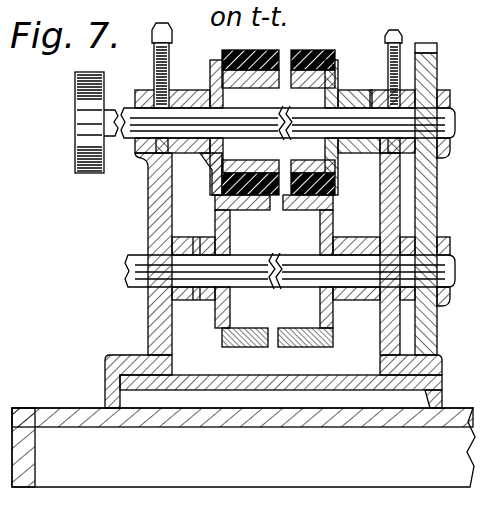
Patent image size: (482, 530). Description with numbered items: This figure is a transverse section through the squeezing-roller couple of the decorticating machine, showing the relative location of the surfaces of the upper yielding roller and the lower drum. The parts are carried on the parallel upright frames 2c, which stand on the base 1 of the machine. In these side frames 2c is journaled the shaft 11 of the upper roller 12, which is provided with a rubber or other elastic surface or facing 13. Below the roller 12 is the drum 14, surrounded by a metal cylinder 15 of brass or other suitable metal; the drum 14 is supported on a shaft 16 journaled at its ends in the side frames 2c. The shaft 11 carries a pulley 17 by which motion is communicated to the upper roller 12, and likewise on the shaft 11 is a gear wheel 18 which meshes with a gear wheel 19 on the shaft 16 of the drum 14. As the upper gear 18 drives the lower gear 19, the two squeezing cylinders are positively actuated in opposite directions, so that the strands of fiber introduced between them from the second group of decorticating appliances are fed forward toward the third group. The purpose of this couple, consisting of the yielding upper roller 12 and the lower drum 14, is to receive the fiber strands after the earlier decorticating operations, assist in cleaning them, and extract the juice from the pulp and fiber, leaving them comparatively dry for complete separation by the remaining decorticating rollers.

The base 1 is at (52, 408).
The upright frames 2c is at (456, 362).
The shaft 11 is at (452, 122).
The roller 12 is at (338, 99).
The rubber or other elastic surface or facing 13 is at (312, 63).
The drum 14 is at (331, 223).
The metal cylinder 15 is at (333, 340).
The shaft 16 is at (452, 268).
The pulley 17 is at (76, 124).
The gear wheel 18 is at (440, 58).
The gear wheel 19 is at (438, 330).